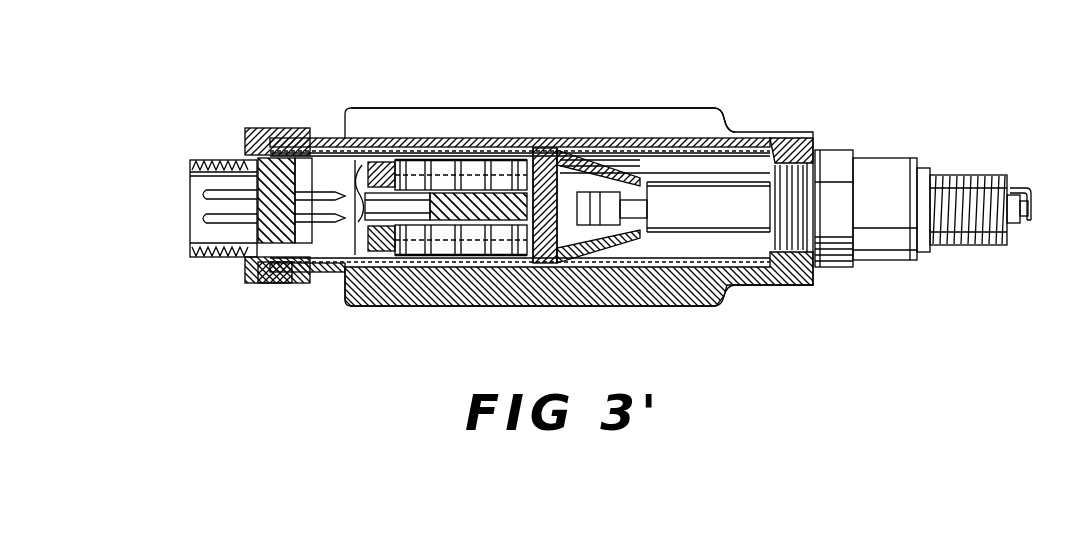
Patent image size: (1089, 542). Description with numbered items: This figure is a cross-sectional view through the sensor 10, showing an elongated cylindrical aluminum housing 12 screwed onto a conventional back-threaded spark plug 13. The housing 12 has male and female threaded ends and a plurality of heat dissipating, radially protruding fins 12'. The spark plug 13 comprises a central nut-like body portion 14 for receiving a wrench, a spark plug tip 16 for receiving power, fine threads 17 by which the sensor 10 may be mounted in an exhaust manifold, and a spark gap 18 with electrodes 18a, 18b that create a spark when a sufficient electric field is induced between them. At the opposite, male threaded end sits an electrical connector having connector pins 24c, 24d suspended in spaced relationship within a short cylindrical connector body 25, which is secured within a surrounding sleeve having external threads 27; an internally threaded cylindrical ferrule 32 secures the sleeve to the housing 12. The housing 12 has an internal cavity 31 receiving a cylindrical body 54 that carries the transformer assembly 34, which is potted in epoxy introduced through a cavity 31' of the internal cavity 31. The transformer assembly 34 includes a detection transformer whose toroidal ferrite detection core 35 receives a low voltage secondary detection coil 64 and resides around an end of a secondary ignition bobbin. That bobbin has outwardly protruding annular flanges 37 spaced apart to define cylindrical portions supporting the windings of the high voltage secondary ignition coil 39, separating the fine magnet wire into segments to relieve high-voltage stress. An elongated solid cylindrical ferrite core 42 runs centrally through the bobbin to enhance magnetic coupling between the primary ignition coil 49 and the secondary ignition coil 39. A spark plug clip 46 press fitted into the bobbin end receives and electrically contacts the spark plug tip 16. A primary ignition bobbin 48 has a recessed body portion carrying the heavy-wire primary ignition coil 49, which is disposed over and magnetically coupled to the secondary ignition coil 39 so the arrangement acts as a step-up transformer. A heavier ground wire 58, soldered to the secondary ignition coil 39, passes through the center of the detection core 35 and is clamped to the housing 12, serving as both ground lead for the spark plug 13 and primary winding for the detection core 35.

The sensor 10 is at (679, 52).
The housing 12 is at (541, 226).
The fins 12' is at (551, 102).
The spark plug 13 is at (830, 132).
The nut-like body portion 14 is at (828, 262).
The spark plug tip 16 is at (612, 148).
The fine threads 17 is at (950, 236).
The spark gap 18 is at (1016, 240).
The electrode 18a is at (1020, 224).
The electrode 18b is at (1029, 200).
The connector pin 24c is at (208, 195).
The connector pin 24d is at (206, 218).
The connector body 25 is at (270, 240).
The external threads 27 is at (208, 160).
The internal cavity 31 is at (520, 218).
The cavity 31' is at (509, 131).
The ferrule 32 is at (252, 128).
The transformer assembly 34 is at (272, 282).
The toroidal ferrite detection core 35 is at (350, 247).
The annular flanges 37 is at (482, 258).
The secondary ignition coil 39 is at (448, 152).
The ferrite core 42 is at (550, 150).
The spark plug clip 46 is at (580, 252).
The primary ignition bobbin 48 is at (480, 160).
The primary ignition coil 49 is at (518, 160).
The cylindrical body 54 is at (633, 137).
The ground wire 58 is at (338, 172).
The secondary detection coil 64 is at (372, 165).